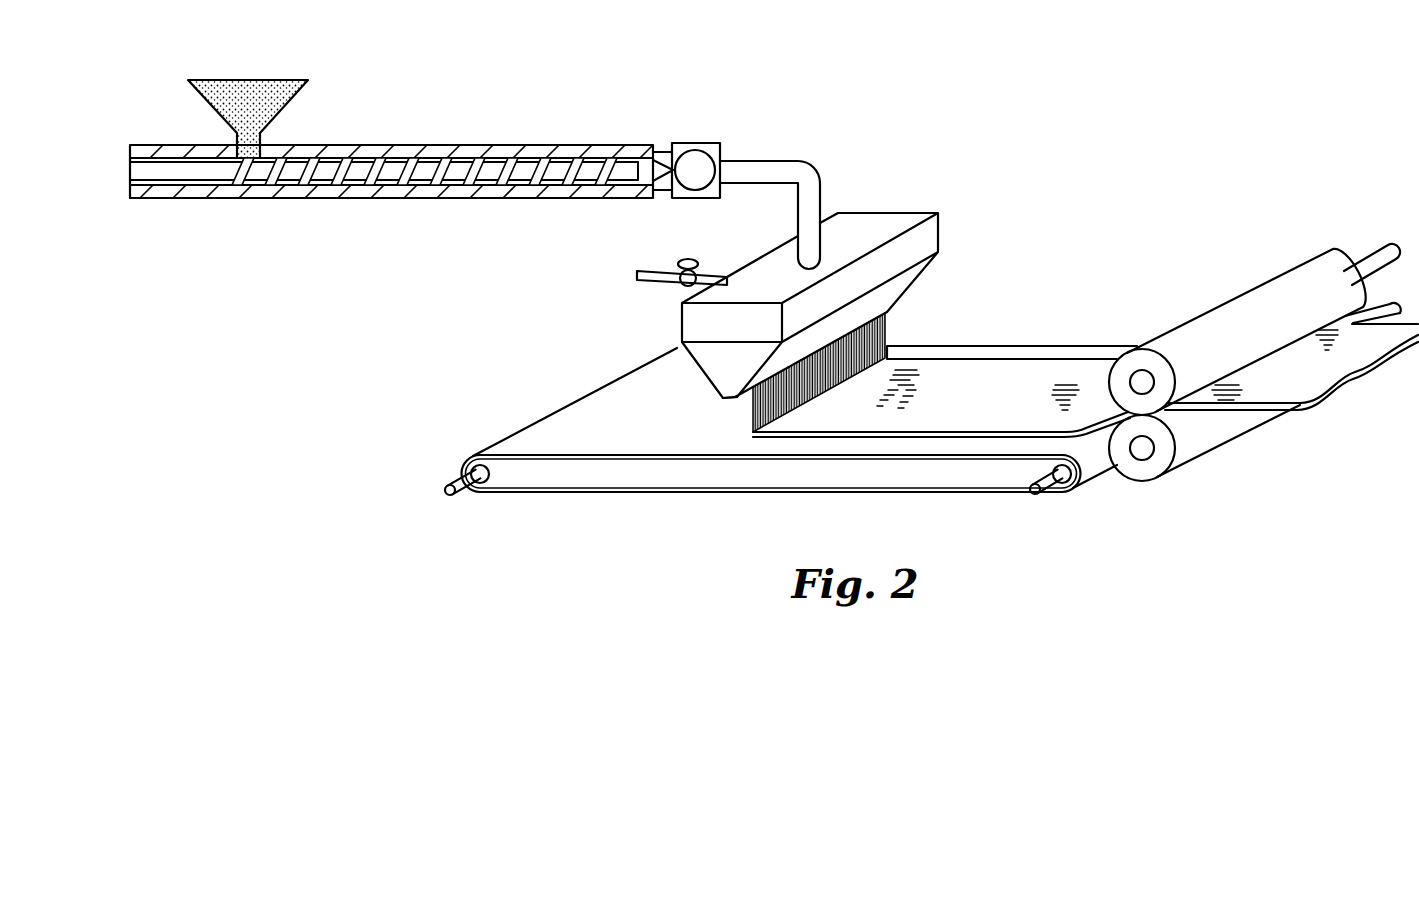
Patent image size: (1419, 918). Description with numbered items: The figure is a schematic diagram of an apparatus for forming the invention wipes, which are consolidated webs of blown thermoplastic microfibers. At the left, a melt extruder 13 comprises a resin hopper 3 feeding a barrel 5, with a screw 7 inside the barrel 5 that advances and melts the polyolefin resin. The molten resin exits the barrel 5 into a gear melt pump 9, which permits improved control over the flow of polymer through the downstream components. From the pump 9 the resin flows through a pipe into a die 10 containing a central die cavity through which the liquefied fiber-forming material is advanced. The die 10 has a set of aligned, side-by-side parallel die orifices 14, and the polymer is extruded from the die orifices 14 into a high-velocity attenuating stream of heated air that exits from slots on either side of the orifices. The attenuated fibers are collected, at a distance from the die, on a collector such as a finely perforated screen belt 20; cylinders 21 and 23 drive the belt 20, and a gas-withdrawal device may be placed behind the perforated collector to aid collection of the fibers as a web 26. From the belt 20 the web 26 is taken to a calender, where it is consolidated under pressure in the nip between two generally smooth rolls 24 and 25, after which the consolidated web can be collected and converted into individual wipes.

The resin hopper 3 is at (248, 83).
The barrel 5 is at (395, 193).
The screw 7 is at (487, 172).
The gear melt pump 9 is at (694, 160).
The die 10 is at (932, 236).
The melt extruder 13 is at (452, 139).
The die orifices 14 is at (727, 380).
The collector belt 20 is at (573, 430).
The cylinder 21 is at (487, 482).
The cylinder 23 is at (1068, 480).
The roll 24 is at (1133, 360).
The roll 25 is at (1140, 470).
The web 26 is at (992, 373).